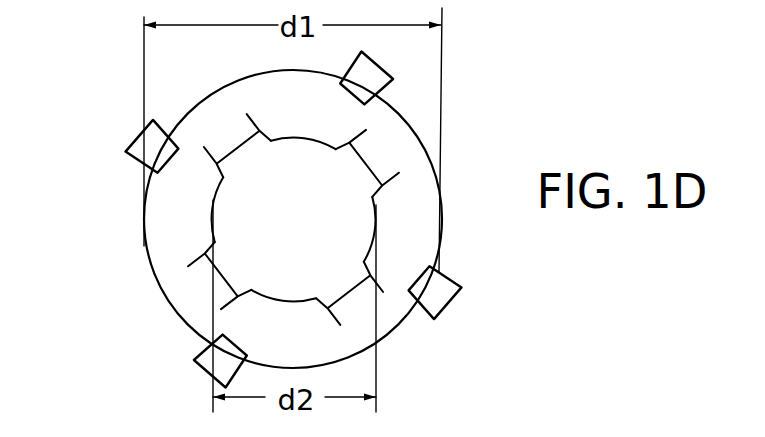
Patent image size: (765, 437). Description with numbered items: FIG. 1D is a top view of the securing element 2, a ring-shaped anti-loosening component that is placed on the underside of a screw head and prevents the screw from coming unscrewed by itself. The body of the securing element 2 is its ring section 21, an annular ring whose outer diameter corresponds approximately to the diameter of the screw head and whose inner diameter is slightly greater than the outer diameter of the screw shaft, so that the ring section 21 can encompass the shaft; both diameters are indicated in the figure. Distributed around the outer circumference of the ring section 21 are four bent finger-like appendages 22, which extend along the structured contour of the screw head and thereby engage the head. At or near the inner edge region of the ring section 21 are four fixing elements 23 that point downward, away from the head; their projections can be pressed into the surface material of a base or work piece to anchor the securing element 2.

The securing element 2 is at (116, 204).
The ring section 21 is at (162, 232).
The appendages 22 is at (133, 147).
The fixing elements 23 is at (372, 166).